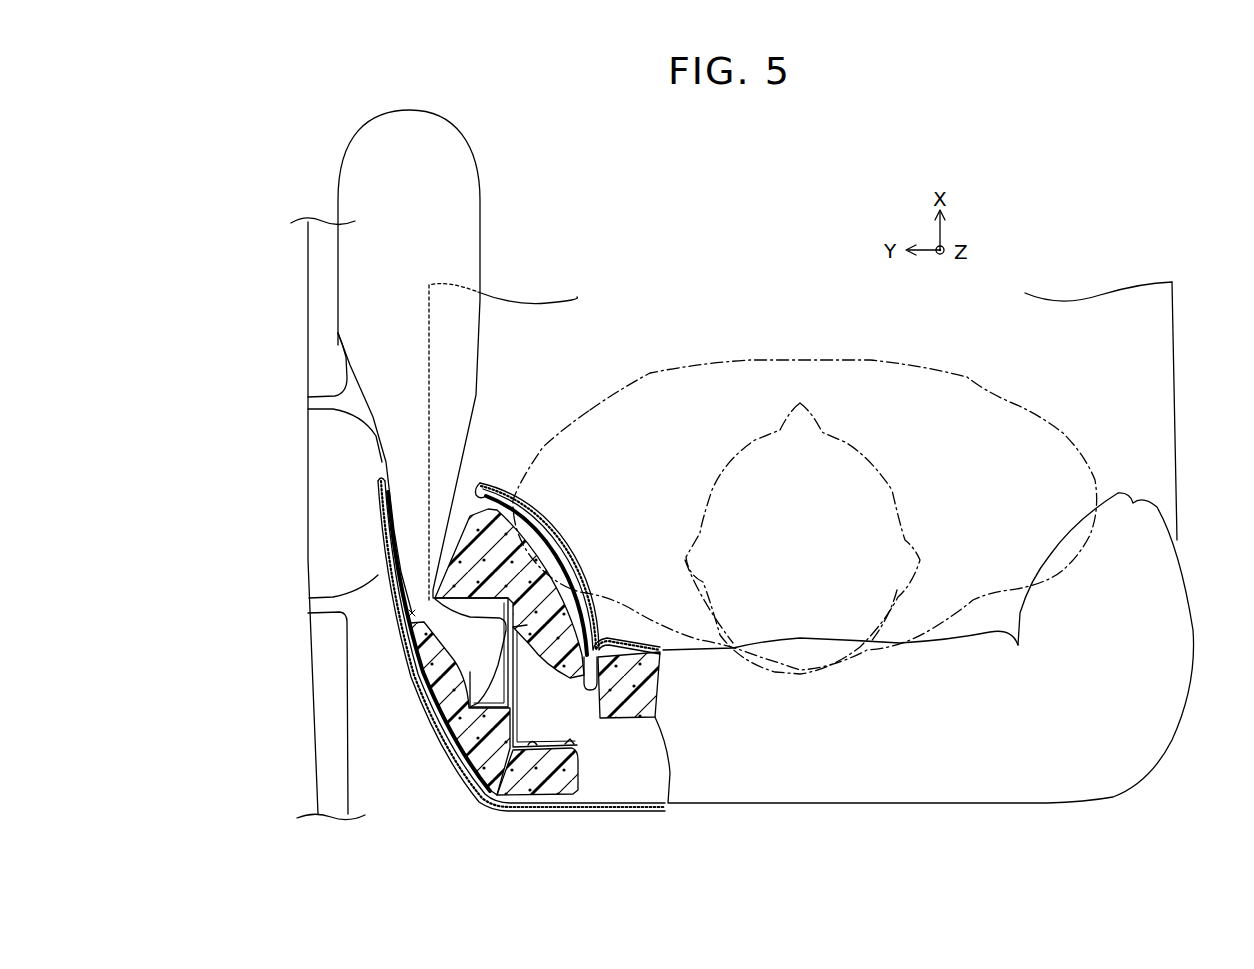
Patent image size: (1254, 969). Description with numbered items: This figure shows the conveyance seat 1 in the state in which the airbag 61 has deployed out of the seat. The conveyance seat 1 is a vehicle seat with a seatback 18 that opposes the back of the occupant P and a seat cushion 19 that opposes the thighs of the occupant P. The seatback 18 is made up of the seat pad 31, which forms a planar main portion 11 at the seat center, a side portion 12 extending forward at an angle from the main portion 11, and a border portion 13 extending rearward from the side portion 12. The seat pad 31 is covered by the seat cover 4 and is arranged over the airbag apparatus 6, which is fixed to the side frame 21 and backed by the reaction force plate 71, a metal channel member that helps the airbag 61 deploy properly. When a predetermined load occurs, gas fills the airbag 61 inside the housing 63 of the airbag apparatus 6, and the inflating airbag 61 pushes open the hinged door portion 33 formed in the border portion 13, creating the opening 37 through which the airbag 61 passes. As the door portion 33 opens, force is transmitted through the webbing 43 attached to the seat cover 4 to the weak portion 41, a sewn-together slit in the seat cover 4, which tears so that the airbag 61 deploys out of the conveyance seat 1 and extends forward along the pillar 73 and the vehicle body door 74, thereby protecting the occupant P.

The conveyance seat 1 is at (1178, 770).
The seat cover 4 is at (400, 640).
The airbag apparatus 6 is at (497, 610).
The main portion 11 is at (650, 641).
The side portion 12 is at (512, 498).
The border portion 13 is at (453, 763).
The seatback 18 is at (1052, 764).
The seat cushion 19 is at (1140, 381).
The side frame 21 is at (572, 744).
The seat pad 31 is at (625, 677).
The door portion 33 is at (467, 718).
The opening 37 is at (410, 613).
The weak portion 41 is at (461, 207).
The webbing 43 is at (403, 673).
The airbag 61 is at (500, 664).
The housing 63 is at (460, 681).
The reaction force plate 71 is at (495, 704).
The pillar 73 is at (322, 498).
The vehicle body door 74 is at (318, 289).
The occupant P is at (752, 357).